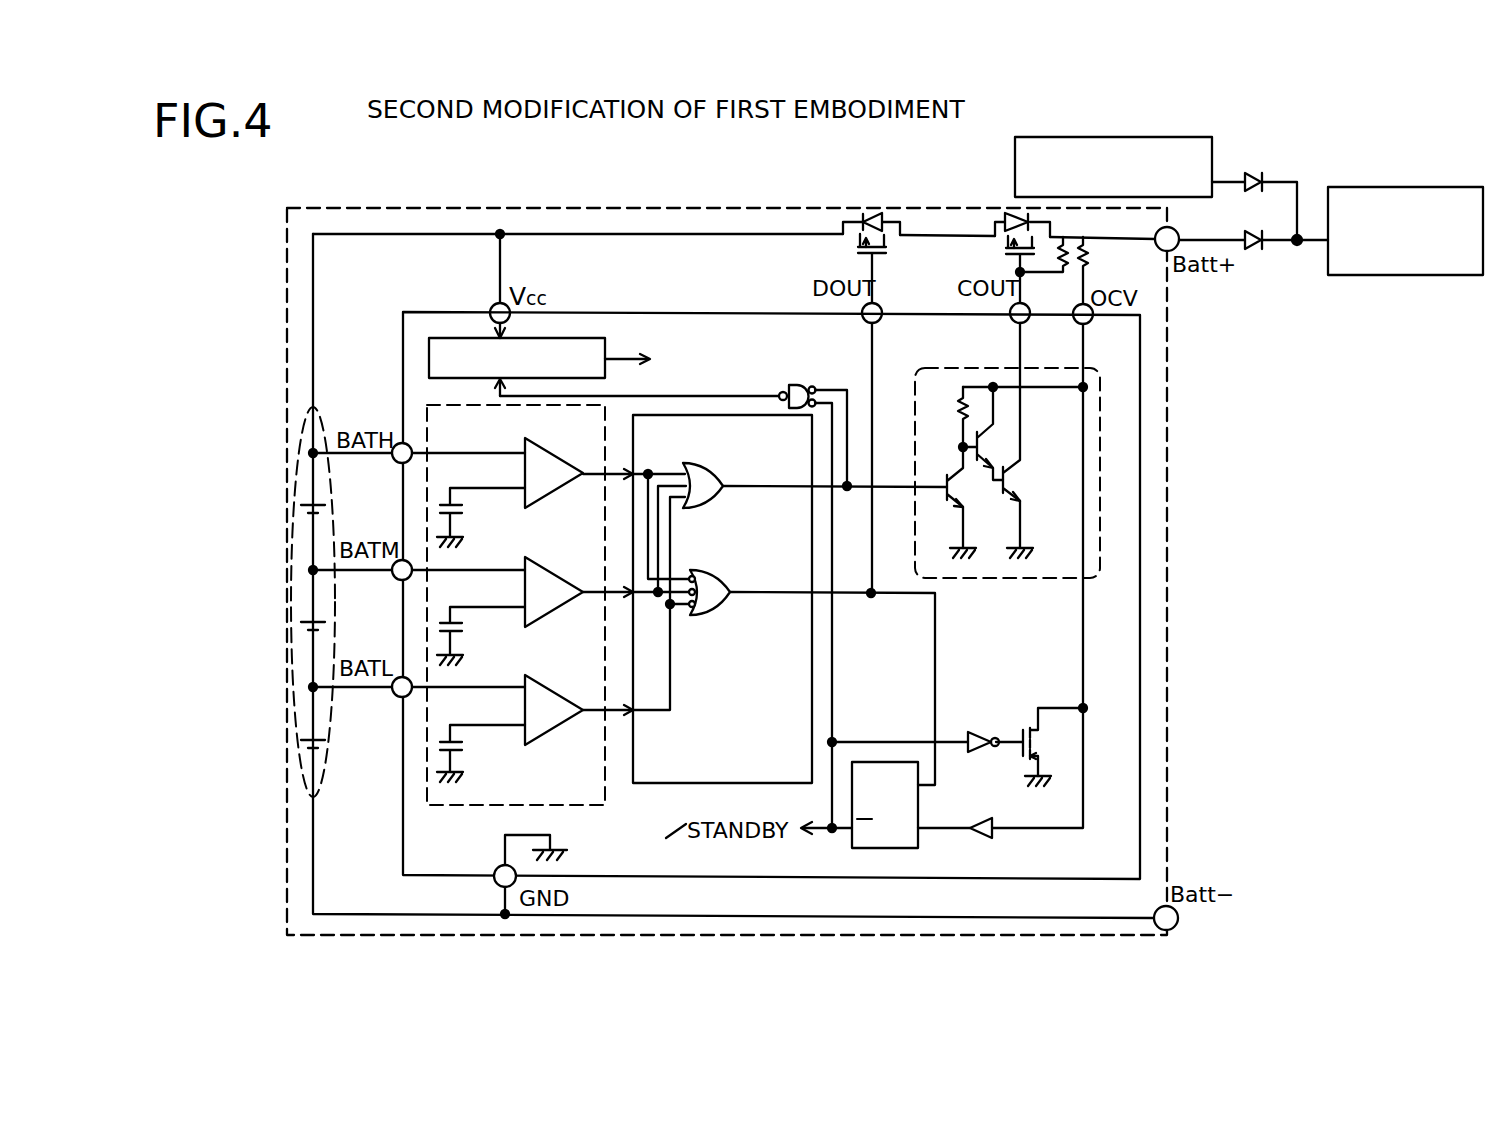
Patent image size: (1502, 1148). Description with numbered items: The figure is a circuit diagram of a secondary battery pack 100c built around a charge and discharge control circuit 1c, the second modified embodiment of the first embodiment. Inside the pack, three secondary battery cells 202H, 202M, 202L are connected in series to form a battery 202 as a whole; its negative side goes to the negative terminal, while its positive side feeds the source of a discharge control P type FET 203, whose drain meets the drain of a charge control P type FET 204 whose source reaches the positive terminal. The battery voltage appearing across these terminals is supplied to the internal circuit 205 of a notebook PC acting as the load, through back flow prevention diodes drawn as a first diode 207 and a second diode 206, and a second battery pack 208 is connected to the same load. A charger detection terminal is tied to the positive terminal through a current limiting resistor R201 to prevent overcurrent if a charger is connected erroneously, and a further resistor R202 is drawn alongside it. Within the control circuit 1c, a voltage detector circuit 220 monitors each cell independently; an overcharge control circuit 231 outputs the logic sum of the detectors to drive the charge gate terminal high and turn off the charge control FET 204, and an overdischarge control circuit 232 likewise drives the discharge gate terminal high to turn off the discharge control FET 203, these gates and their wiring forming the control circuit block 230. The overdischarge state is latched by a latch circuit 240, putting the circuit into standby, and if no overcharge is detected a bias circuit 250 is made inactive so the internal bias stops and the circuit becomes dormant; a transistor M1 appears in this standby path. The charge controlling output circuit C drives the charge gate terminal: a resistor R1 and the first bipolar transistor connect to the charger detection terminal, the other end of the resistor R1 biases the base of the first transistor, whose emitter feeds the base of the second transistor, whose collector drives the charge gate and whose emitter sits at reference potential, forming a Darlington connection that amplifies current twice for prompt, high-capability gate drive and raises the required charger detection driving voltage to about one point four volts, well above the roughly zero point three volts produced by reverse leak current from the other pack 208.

The battery pack 100c is at (436, 191).
The charge and discharge control circuit 1c is at (1153, 418).
The secondary battery 202 is at (271, 602).
The secondary battery cell 202H is at (307, 507).
The secondary battery cell 202M is at (302, 630).
The secondary battery cell 202L is at (302, 745).
The discharge control P type FET 203 is at (869, 213).
The charge control P type FET 204 is at (1015, 213).
The internal circuit 205 is at (1437, 189).
The diode D2 206 is at (1263, 247).
The diode D1 207 is at (1259, 180).
The battery pack 208 is at (1198, 150).
The voltage detector circuit 220 is at (545, 805).
The control circuit 230 is at (788, 616).
The overcharge control circuit 231 is at (703, 468).
The overdischarge control circuit 232 is at (711, 574).
The latch circuit 240 is at (918, 840).
The bias circuit 250 is at (593, 341).
The charge controlling output circuit C is at (1058, 450).
The resistor R1 is at (950, 417).
The current limiting resistor R201 is at (1111, 270).
The resistor R202 is at (1066, 245).
The MOS transistor M1 is at (1039, 747).